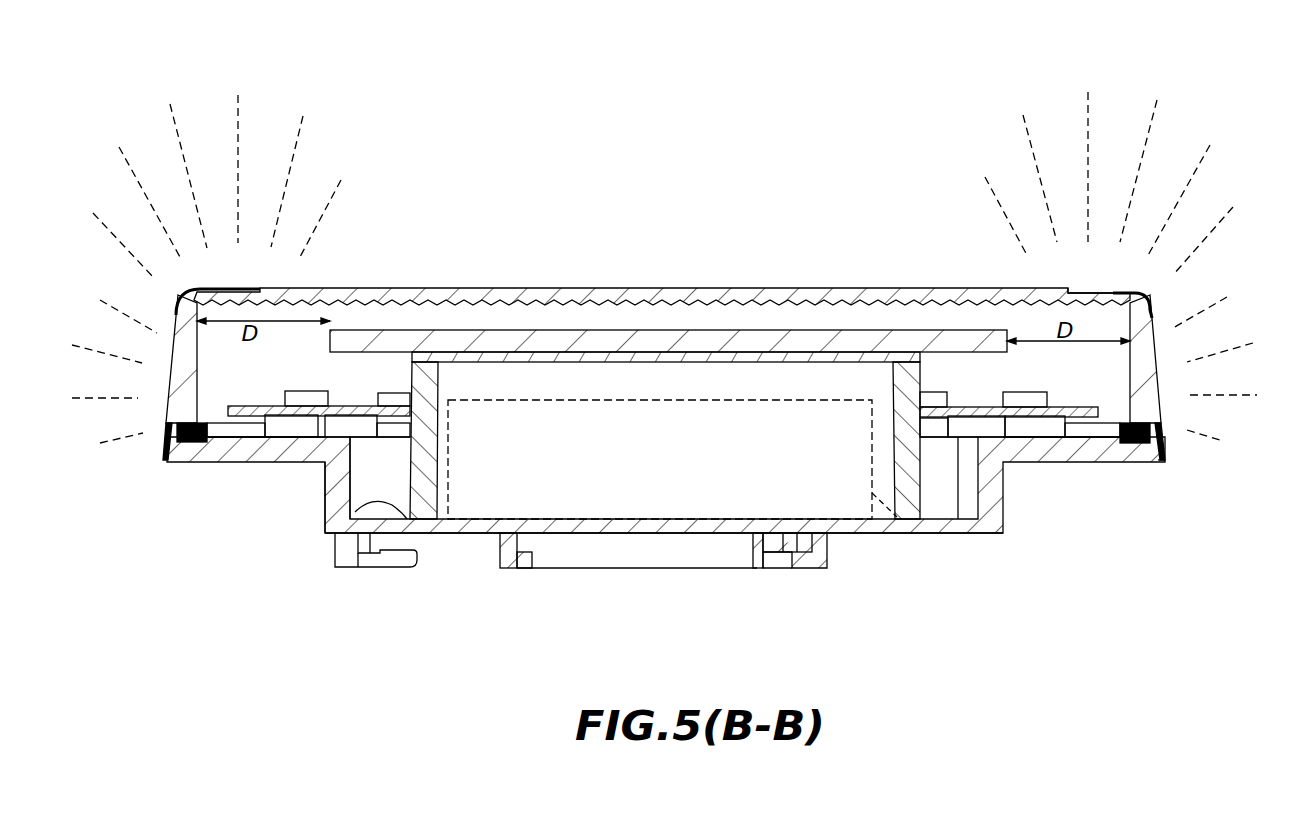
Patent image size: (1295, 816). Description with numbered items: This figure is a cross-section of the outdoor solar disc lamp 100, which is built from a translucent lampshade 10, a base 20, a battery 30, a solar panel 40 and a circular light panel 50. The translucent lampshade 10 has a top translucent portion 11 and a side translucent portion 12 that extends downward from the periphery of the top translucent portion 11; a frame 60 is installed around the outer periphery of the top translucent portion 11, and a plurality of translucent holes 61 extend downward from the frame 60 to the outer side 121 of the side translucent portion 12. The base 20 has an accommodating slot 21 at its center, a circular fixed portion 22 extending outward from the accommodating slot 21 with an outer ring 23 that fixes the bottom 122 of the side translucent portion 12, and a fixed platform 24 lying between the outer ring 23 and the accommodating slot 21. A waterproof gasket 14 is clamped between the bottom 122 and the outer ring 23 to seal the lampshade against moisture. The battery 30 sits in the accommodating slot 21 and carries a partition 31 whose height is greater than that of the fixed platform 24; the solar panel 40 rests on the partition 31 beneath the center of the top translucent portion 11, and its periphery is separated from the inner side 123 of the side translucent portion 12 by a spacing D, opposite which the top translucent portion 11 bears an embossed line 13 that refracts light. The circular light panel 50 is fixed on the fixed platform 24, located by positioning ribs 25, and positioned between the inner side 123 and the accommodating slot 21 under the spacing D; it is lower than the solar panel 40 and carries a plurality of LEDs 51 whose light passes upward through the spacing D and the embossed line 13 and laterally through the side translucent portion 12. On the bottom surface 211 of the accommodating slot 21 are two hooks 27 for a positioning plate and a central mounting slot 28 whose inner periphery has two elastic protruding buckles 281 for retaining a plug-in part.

The outdoor solar disc lamp 100 is at (219, 54).
The translucent lampshade 10 is at (475, 278).
The top translucent portion 11 is at (692, 290).
The side translucent portion 12 is at (1160, 405).
The outer side of side translucent portion 121 is at (717, 414).
The bottom of side translucent portion 122 is at (1155, 465).
The inner side of side translucent portion 123 is at (1095, 293).
The embossed line 13 is at (1005, 296).
The waterproof gasket 14 is at (1125, 447).
The base 20 is at (968, 554).
The accommodating slot 21 is at (333, 535).
The bottom surface of accommodating slot 211 is at (472, 533).
The circular fixed portion 22 is at (187, 471).
The outer ring 23 is at (200, 422).
The fixed platform 24 is at (248, 423).
The positioning ribs 25 is at (245, 440).
The hooks 27 is at (393, 568).
The mounting slot 28 is at (655, 535).
The elastic protruding buckles 281 is at (548, 568).
The battery 30 is at (903, 535).
The partition 31 is at (570, 352).
The solar panel 40 is at (770, 333).
The circular light panel 50 is at (1068, 408).
The LEDs 51 is at (303, 391).
The frame 60 is at (1165, 297).
The translucent holes 61 is at (185, 313).